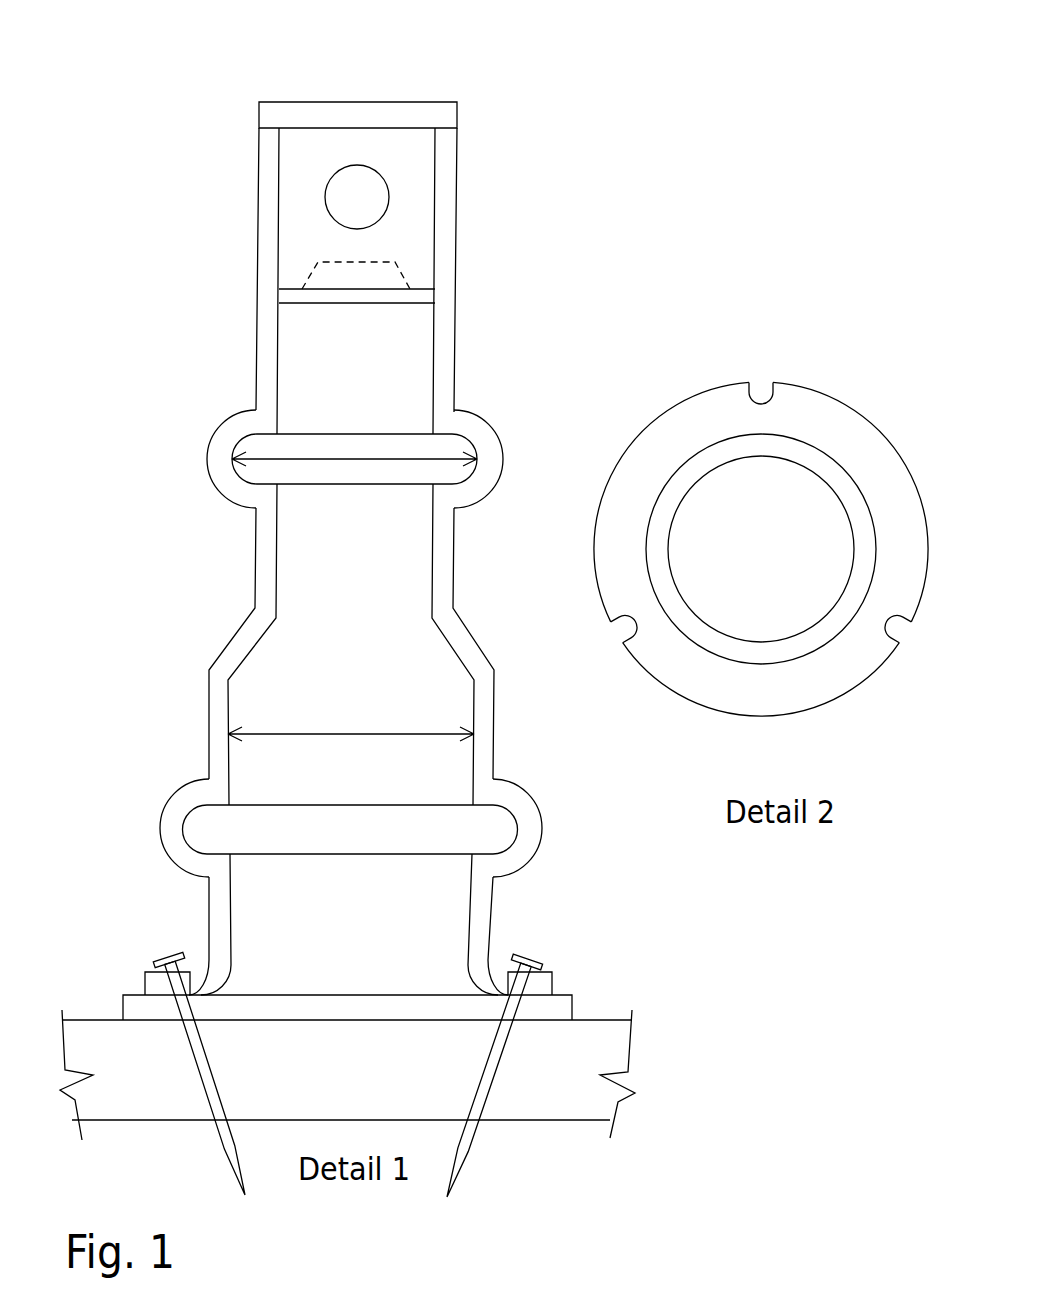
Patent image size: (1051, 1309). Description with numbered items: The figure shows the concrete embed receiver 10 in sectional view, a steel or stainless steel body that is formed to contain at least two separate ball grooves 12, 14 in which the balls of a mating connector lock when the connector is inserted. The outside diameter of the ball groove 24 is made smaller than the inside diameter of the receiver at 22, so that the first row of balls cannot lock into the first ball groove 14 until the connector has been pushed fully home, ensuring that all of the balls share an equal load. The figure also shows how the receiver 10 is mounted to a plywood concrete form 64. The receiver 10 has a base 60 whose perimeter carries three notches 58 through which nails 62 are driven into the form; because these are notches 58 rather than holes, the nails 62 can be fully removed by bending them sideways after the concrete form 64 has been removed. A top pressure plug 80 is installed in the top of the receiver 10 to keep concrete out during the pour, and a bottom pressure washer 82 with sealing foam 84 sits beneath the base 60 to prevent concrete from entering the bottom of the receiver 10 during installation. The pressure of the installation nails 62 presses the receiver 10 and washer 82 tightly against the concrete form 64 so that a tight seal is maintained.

The concrete embed receiver 10 is at (455, 349).
The ball groove 12 is at (500, 463).
The first ball groove 14 is at (535, 855).
The inside diameter of the receiver 22 is at (228, 734).
The outside diameter of the ball groove 24 is at (232, 459).
The notches 58 is at (762, 392).
The base 60 is at (833, 405).
The nails 62 is at (213, 1143).
The concrete form 64 is at (610, 1017).
The top pressure plug 80 is at (387, 100).
The bottom pressure washer 82 is at (390, 183).
The sealing foam 84 is at (572, 1000).